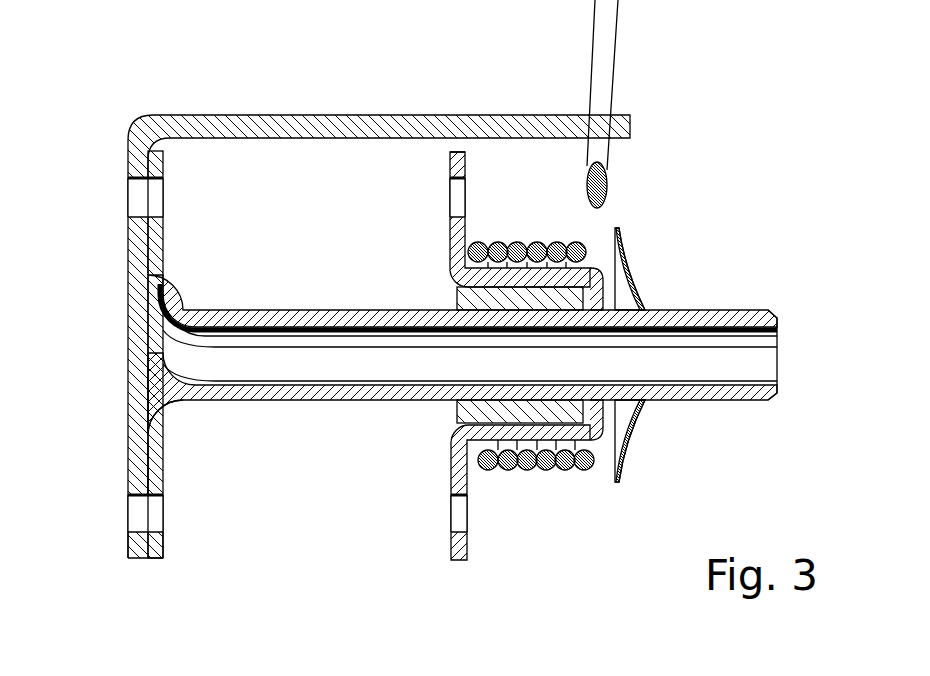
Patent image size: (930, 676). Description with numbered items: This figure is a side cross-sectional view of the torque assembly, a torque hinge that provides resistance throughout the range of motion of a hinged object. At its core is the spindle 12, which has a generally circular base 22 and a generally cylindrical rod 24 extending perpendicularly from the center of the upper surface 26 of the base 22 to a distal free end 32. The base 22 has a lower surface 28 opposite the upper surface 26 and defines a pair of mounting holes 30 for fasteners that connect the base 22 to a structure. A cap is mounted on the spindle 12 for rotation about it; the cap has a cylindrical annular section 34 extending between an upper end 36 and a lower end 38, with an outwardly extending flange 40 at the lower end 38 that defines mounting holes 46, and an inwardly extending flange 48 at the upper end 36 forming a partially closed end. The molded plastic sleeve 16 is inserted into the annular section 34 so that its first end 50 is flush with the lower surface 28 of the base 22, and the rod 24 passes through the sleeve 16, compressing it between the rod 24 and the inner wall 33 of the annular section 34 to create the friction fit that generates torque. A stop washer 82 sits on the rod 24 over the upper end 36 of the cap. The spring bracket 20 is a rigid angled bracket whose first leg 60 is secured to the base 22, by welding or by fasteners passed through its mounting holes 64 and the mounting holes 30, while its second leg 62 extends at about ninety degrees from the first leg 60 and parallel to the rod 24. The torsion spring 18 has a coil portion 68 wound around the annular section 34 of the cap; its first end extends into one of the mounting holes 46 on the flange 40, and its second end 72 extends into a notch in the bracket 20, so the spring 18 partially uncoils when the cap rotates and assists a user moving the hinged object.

The spindle 12 is at (228, 398).
The sleeve 16 is at (558, 410).
The torsion spring 18 is at (546, 471).
The spring bracket 20 is at (145, 120).
The base 22 is at (155, 240).
The rod 24 is at (683, 310).
The upper surface 26 is at (165, 458).
The lower surface 28 is at (150, 476).
The mounting holes 30 is at (155, 511).
The distal free end 32 is at (770, 310).
The inner wall 33 is at (508, 422).
The annular section 34 is at (517, 280).
The upper end 36 is at (598, 275).
The lower end 38 is at (450, 163).
The outwardly extending flange 40 is at (458, 160).
The mounting holes 46 is at (462, 513).
The inwardly extending flange 48 is at (603, 423).
The first end 50 is at (462, 409).
The first leg 60 is at (140, 322).
The second leg 62 is at (262, 112).
The mounting holes 64 is at (135, 196).
The coil portion 68 is at (584, 472).
The second end 72 is at (603, 62).
The stop washer 82 is at (625, 458).